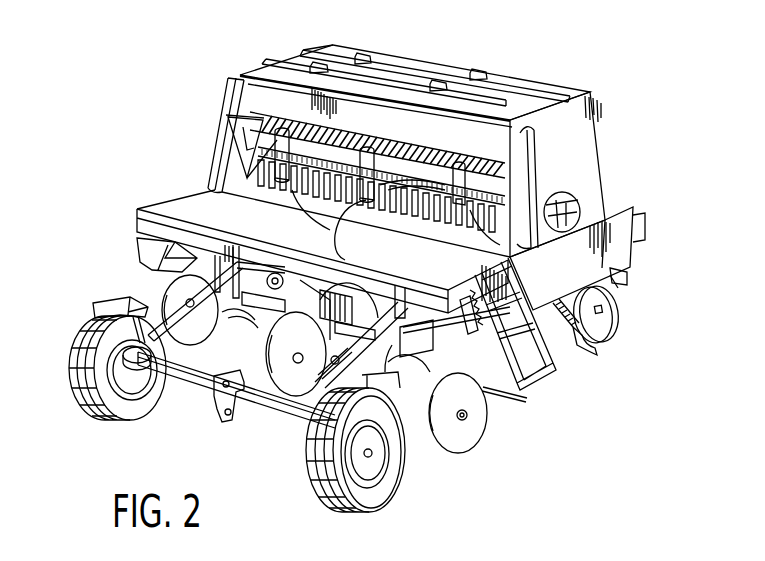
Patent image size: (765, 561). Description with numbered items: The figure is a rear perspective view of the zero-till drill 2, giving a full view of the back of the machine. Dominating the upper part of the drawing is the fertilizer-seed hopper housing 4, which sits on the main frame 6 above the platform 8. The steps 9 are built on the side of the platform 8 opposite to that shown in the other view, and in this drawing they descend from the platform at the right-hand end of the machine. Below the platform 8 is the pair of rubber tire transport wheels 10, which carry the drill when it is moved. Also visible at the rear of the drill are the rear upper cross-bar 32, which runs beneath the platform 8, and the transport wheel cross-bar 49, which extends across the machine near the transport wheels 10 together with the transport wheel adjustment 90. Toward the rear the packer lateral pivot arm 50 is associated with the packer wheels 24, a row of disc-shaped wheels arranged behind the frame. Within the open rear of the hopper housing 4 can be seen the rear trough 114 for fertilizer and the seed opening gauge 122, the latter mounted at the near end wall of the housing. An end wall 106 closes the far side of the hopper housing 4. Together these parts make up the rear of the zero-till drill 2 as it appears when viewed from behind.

The zero-till drill 2 is at (182, 152).
The fertilizer-seed hopper housing 4 is at (597, 170).
The main frame 6 is at (609, 252).
The platform 8 is at (158, 210).
The steps 9 is at (533, 368).
The rubber tire transport wheels 10 is at (72, 343).
The packer wheels 24 is at (466, 432).
The rear upper cross-bar 32 is at (160, 233).
The transport wheel cross-bar 49 is at (278, 395).
The packer lateral pivot arm 50 is at (483, 405).
The transport wheel adjustment 90 is at (158, 327).
The hopper end wall 106 is at (563, 128).
The rear trough (fertilizer) 114 is at (443, 143).
The seed opening gauge 122 is at (237, 132).